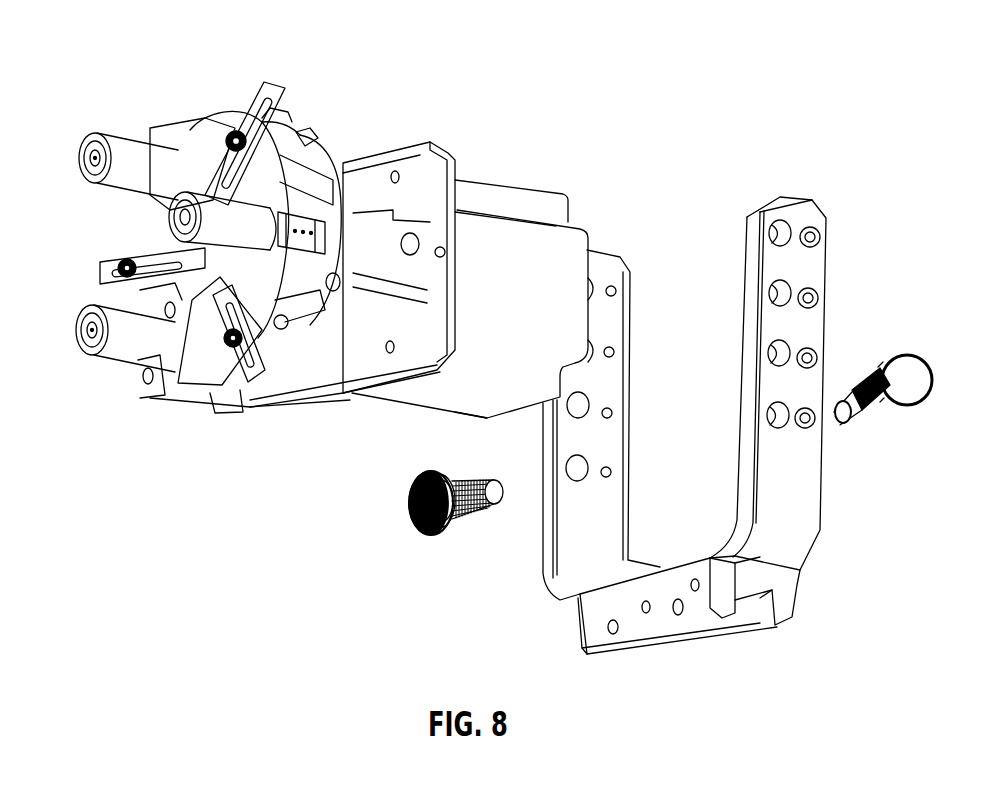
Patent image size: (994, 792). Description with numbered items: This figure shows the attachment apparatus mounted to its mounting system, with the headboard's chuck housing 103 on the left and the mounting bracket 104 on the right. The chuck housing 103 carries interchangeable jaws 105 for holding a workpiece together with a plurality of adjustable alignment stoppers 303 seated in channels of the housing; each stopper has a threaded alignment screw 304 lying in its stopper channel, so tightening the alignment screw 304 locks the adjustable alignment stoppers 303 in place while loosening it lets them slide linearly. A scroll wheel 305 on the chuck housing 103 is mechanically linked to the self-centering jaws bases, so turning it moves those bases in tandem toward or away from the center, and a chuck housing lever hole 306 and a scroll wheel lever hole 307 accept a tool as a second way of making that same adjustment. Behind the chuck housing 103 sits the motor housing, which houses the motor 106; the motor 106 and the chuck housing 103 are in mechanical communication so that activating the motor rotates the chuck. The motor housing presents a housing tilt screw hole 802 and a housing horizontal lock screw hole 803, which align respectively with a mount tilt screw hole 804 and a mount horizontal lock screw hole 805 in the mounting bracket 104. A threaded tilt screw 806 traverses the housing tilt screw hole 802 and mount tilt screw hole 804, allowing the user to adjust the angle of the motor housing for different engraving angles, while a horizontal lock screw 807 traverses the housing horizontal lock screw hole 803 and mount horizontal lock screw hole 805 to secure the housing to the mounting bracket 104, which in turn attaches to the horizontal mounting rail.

The chuck housing 103 is at (207, 380).
The mounting bracket 104 is at (718, 417).
The interchangeable jaws 105 is at (92, 152).
The motor 106 is at (548, 192).
The adjustable alignment stoppers 303 is at (117, 260).
The alignment screw 304 is at (236, 130).
The scroll wheel 305 is at (281, 106).
The chuck housing lever hole 306 is at (283, 330).
The scroll wheel lever hole 307 is at (307, 136).
The housing tilt screw hole 802 is at (423, 248).
The housing horizontal lock screw hole 803 is at (445, 258).
The mount tilt screw hole 804 is at (768, 358).
The mount horizontal lock screw hole 805 is at (816, 303).
The tilt screw 806 is at (430, 540).
The horizontal lock screw 807 is at (848, 420).